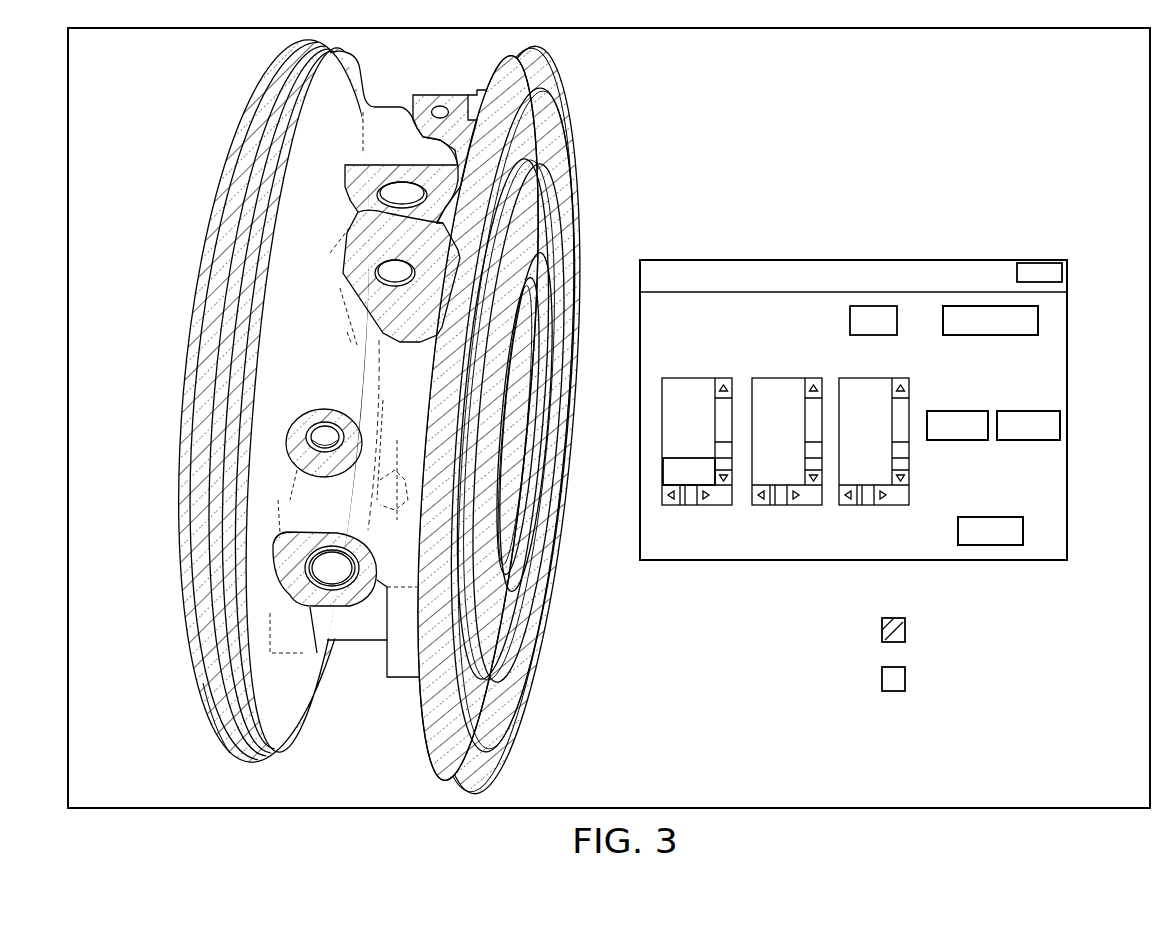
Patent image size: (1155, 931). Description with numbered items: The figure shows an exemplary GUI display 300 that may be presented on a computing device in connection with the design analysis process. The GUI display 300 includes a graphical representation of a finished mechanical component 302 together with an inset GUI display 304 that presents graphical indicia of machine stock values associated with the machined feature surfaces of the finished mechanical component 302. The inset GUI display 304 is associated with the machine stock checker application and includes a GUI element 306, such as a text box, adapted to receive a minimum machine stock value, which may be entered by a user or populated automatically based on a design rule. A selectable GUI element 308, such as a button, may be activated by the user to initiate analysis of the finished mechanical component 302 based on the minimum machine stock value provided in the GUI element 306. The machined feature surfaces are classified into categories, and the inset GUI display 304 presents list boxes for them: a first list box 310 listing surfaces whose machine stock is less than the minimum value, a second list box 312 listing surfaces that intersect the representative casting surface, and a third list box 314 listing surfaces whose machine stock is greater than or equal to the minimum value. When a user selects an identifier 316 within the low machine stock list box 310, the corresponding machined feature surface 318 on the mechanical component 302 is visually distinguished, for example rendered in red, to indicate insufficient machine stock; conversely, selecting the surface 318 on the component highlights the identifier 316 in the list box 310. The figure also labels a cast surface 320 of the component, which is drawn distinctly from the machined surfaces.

The GUI display 300 is at (855, 370).
The finished mechanical component 302 is at (348, 420).
The inset GUI display 304 is at (993, 260).
The GUI element (text box) 306 is at (871, 306).
The selectable GUI element (button) 308 is at (1039, 321).
The first list box 310 is at (663, 485).
The second list box 312 is at (752, 477).
The third list box 314 is at (840, 477).
The identifier 316 is at (652, 433).
The machined feature surface 318 is at (333, 592).
The cast surface 320 is at (298, 603).